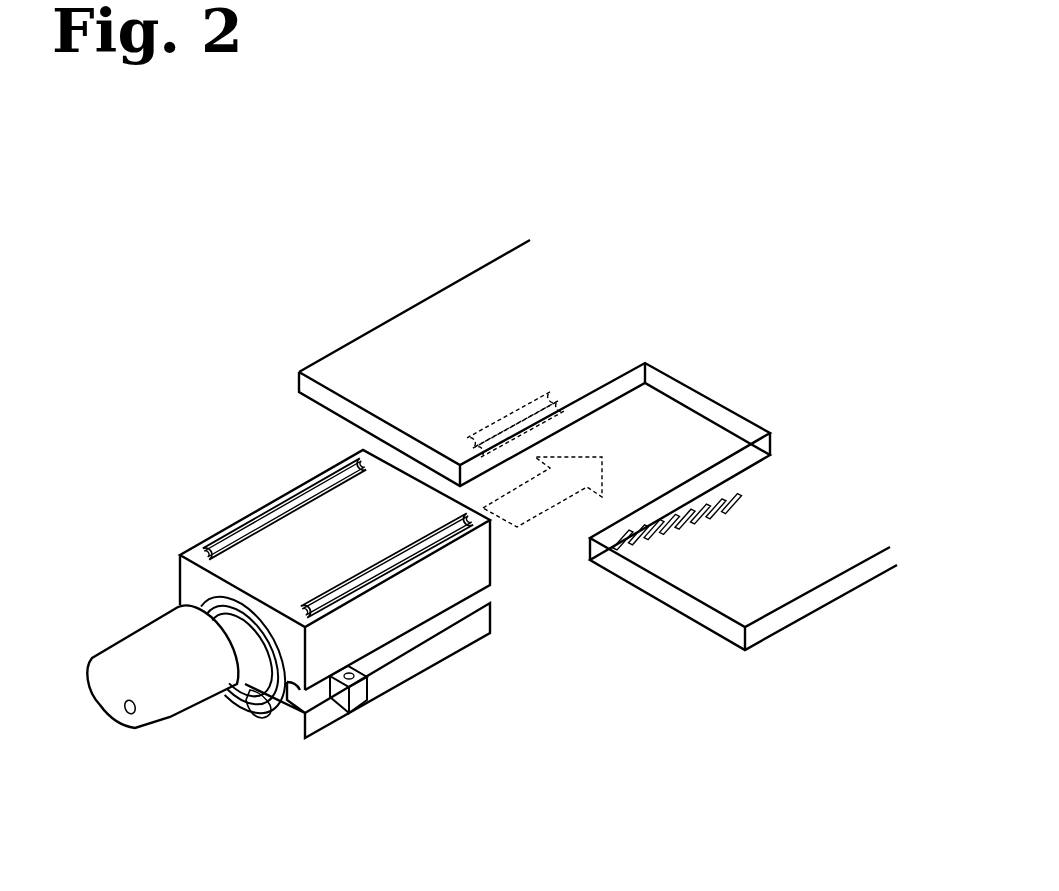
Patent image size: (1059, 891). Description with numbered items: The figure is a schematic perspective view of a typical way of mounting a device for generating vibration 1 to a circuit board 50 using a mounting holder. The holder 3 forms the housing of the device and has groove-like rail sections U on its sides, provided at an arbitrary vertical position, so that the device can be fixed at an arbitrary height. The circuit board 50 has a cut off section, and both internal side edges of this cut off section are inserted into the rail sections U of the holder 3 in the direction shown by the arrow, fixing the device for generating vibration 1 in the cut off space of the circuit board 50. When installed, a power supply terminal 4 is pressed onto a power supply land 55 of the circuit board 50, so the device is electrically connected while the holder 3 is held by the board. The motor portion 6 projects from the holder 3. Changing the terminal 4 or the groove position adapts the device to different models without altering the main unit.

The device for generating vibration 1 is at (200, 494).
The holder 3 is at (273, 540).
The power supply terminal 4 is at (362, 698).
The motor 6 is at (148, 637).
The circuit board 50 is at (458, 320).
The power supply land 55 is at (662, 548).
The groove-like rail sections U is at (490, 598).